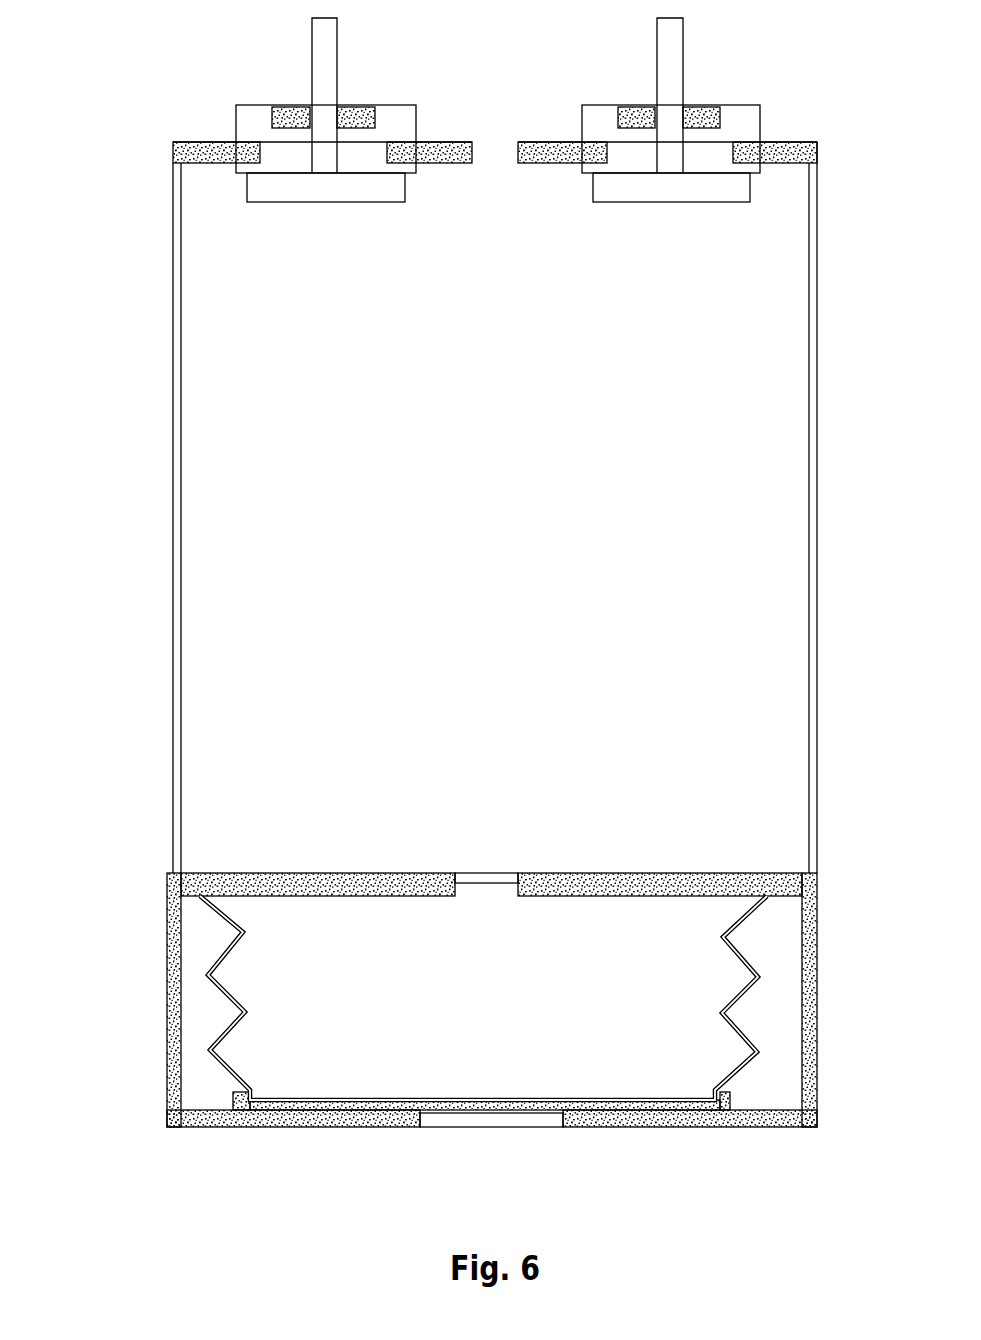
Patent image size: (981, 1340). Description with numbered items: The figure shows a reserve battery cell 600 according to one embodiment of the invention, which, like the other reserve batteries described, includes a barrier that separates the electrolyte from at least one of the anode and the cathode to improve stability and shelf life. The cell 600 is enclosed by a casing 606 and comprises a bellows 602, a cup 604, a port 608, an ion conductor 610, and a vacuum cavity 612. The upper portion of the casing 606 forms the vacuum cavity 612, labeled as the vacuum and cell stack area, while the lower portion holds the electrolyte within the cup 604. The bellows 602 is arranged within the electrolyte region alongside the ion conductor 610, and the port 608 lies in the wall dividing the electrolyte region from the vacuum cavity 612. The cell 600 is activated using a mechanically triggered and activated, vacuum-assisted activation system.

The cell 600 is at (207, 38).
The bellows 602 is at (205, 973).
The cup 604 is at (793, 1123).
The casing 606 is at (811, 665).
The port 608 is at (484, 843).
The ion conductor 610 is at (667, 1015).
The vacuum cavity 612 is at (518, 577).